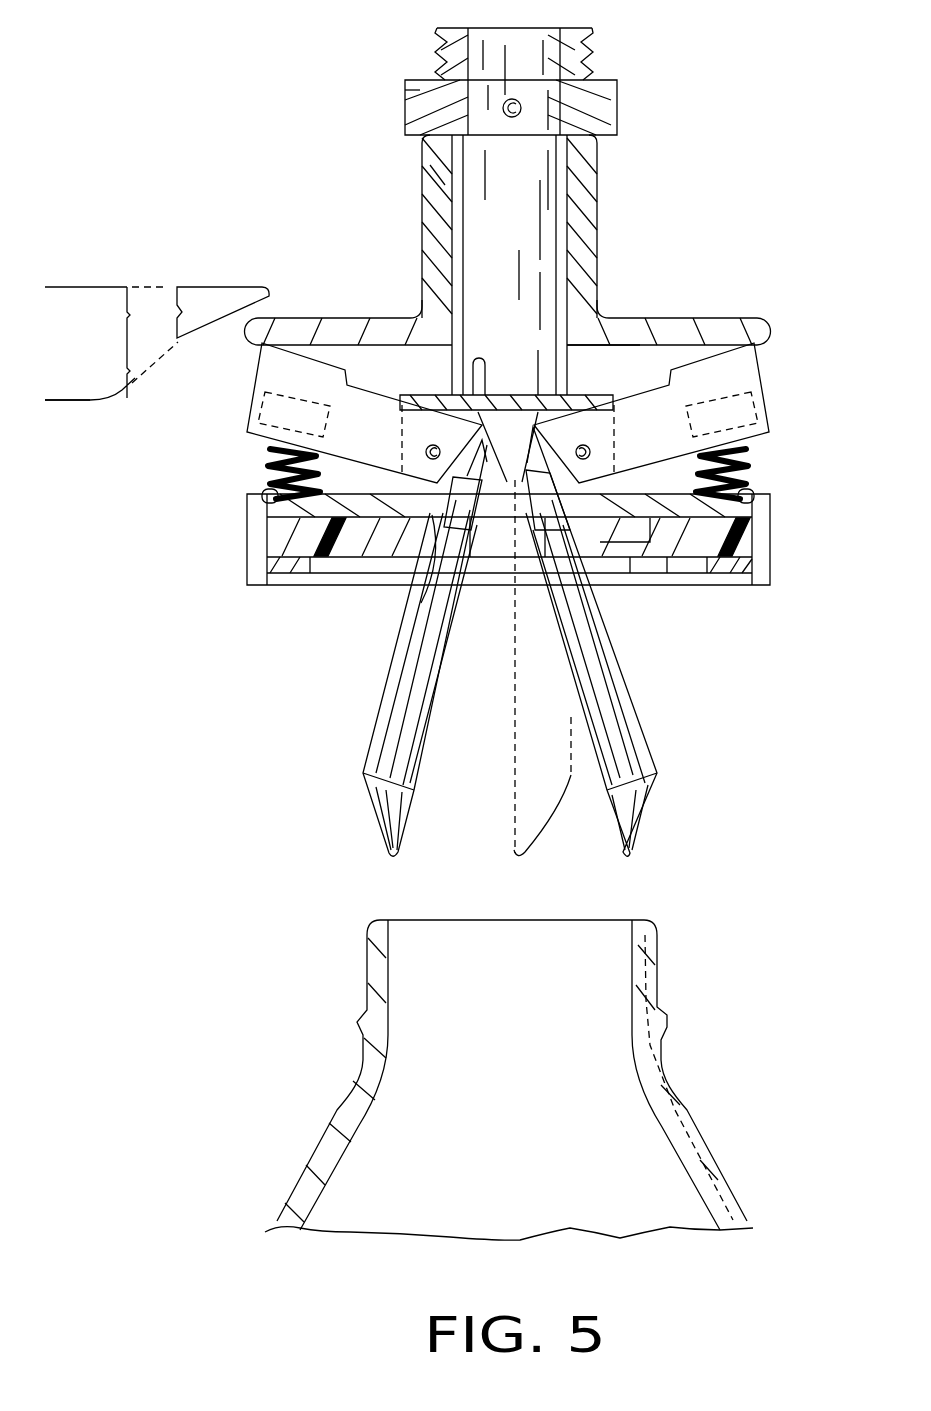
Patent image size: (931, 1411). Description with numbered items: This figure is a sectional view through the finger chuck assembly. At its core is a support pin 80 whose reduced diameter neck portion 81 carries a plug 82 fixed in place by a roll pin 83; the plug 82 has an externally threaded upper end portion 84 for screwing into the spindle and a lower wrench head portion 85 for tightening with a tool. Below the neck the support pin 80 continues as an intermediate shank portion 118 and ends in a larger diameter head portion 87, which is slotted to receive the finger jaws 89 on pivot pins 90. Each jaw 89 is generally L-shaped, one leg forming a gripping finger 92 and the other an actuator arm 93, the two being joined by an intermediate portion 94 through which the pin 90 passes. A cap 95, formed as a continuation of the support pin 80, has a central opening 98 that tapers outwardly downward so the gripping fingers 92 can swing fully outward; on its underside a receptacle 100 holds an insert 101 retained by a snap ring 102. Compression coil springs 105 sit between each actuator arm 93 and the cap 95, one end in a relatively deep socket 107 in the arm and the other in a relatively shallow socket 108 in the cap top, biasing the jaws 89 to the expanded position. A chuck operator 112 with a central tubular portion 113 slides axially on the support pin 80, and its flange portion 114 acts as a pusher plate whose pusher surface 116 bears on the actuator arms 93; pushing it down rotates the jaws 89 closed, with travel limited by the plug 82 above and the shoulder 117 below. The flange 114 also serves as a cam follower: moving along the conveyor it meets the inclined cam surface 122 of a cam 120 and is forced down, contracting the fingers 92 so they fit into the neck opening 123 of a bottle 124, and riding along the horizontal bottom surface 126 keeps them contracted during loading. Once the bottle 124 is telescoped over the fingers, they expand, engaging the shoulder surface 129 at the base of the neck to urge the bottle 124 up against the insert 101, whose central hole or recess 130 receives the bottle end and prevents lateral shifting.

The support pin 80 is at (583, 167).
The reduced diameter neck portion 81 is at (508, 33).
The plug 82 is at (625, 92).
The roll pin 83 is at (503, 108).
The externally threaded upper end portion 84 is at (560, 53).
The lower wrench head portion 85 is at (405, 88).
The end or head portion 87 is at (490, 580).
The finger jaws 89 is at (383, 672).
The pins 90 is at (426, 450).
The gripping finger 92 is at (367, 737).
The actuator arm 93 is at (247, 418).
The intermediate portion 94 is at (435, 398).
The cap 95 is at (780, 535).
The central opening 98 is at (432, 590).
The receptacle 100 is at (740, 550).
The insert 101 is at (673, 540).
The snap ring 102 is at (290, 585).
The springs 105 is at (268, 455).
The relatively deep socket 107 is at (255, 413).
The relatively shallow socket 108 is at (262, 497).
The chuck operator 112 is at (720, 310).
The central tubular portion 113 is at (440, 173).
The flange portion 114 is at (760, 323).
The pusher surface 116 is at (632, 362).
The shoulder 117 is at (483, 395).
The intermediate shank portion 118 is at (470, 278).
The cam 120 is at (75, 287).
The inclined cam surface 122 is at (217, 333).
The neck opening 123 is at (592, 930).
The bottle 124 is at (700, 1133).
The horizontal bottom surface 126 is at (86, 400).
The shoulder surface 129 is at (357, 1128).
The central hole or recess 130 is at (628, 580).